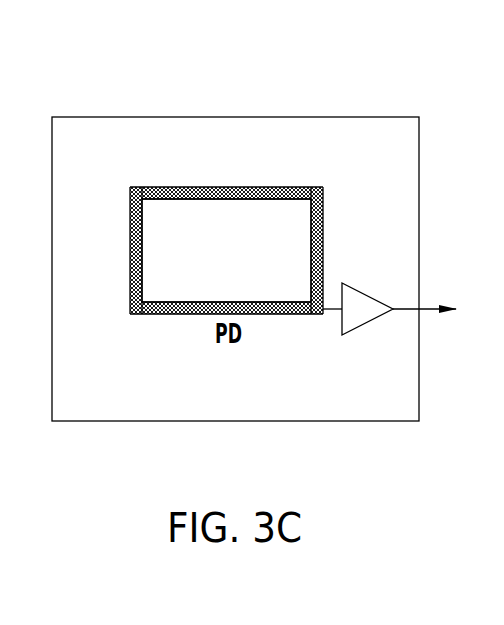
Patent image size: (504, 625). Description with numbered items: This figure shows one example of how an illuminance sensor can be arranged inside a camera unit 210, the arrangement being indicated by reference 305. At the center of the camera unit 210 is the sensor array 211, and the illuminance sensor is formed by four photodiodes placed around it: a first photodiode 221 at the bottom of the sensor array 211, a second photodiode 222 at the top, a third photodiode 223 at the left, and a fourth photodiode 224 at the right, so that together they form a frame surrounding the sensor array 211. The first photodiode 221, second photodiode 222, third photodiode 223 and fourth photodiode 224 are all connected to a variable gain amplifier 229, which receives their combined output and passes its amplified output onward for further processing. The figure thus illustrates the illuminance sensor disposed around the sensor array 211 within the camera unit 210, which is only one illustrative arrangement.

The arrangement of illuminance sensor photodiodes 305 is at (242, 96).
The camera unit 210 is at (356, 117).
The sensor array 211 is at (170, 185).
The first photodiode 221 is at (160, 314).
The second photodiode 222 is at (255, 186).
The third photodiode 223 is at (130, 248).
The fourth photodiode 224 is at (323, 218).
The variable gain amplifier 229 is at (364, 292).